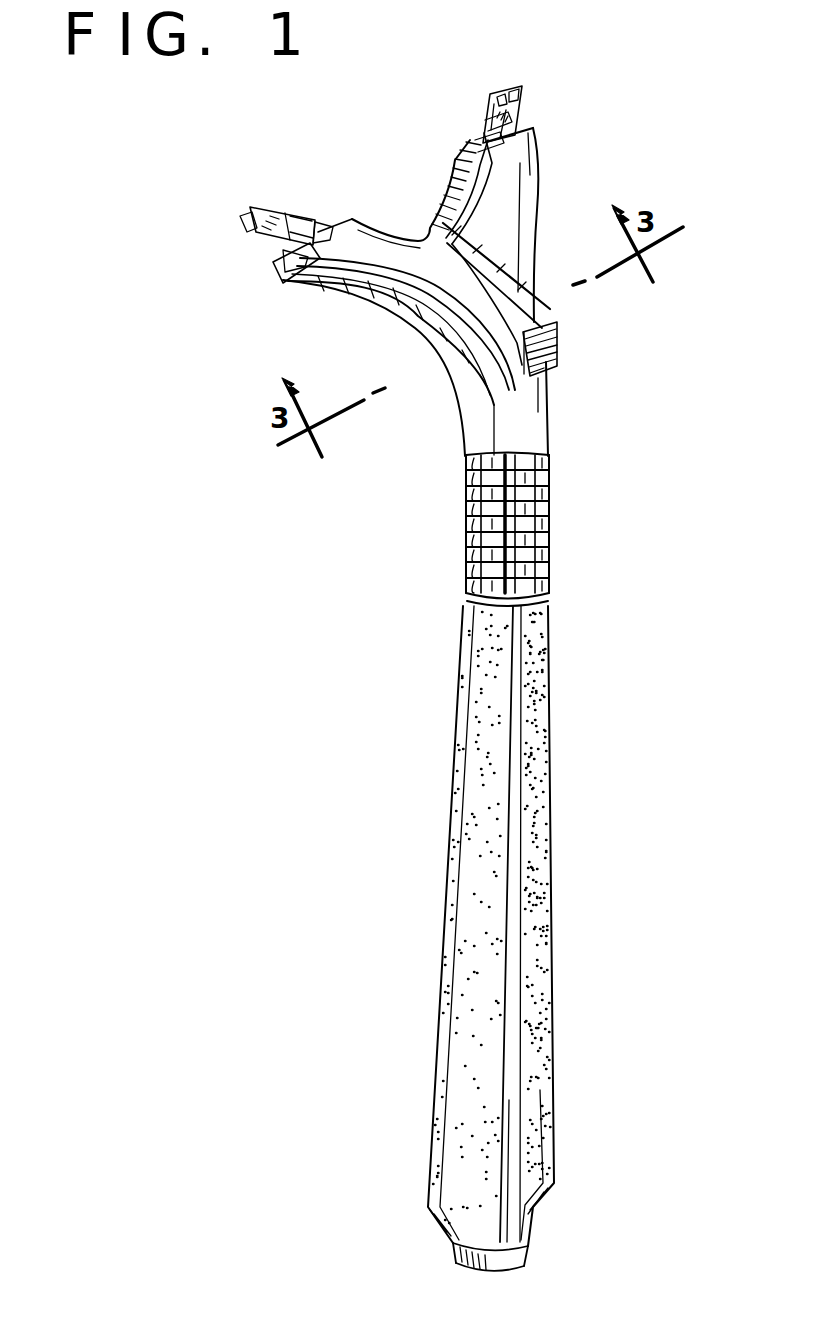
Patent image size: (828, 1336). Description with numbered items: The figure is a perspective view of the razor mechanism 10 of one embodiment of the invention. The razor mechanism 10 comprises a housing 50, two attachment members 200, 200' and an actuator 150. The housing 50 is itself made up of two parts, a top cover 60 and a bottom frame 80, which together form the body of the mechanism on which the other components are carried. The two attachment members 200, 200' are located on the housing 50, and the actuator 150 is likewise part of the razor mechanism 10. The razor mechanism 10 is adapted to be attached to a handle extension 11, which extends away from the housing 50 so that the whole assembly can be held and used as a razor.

The razor mechanism 10 is at (566, 445).
The handle extension 11 is at (548, 701).
The housing 50 is at (545, 184).
The top cover 60 is at (364, 298).
The bottom frame 80 is at (446, 372).
The actuator 150 is at (556, 323).
The attachment member 200 is at (242, 228).
The attachment member 200' is at (545, 90).